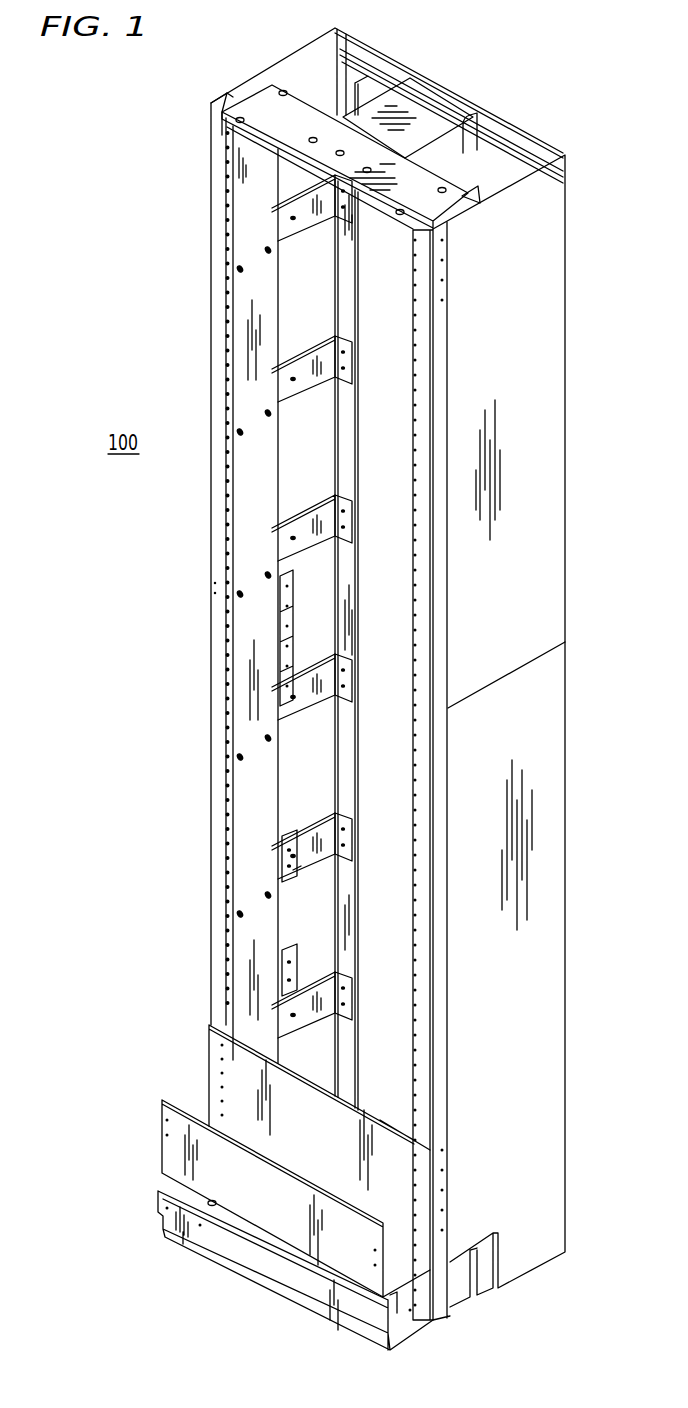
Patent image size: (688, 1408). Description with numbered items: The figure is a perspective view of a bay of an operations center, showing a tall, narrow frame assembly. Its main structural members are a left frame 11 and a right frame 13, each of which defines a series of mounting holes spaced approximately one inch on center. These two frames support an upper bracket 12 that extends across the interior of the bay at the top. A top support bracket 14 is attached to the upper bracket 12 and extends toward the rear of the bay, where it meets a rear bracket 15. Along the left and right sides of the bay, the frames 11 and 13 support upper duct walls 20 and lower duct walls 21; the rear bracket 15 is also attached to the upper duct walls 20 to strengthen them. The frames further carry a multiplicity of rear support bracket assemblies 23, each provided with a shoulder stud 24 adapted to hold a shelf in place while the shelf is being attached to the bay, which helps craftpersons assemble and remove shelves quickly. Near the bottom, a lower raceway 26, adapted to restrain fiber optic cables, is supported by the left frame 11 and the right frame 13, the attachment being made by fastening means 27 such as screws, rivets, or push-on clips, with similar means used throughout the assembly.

The left frame 11 is at (248, 203).
The upper bracket 12 is at (265, 108).
The right frame 13 is at (449, 212).
The top support bracket 14 is at (423, 108).
The rear bracket 15 is at (497, 138).
The upper duct walls 20 is at (312, 292).
The lower duct walls 21 is at (543, 677).
The rear support bracket assemblies 23 is at (283, 860).
The shoulder stud 24 is at (287, 870).
The lower raceway 26 is at (298, 1155).
The fastening means 27 is at (210, 1080).